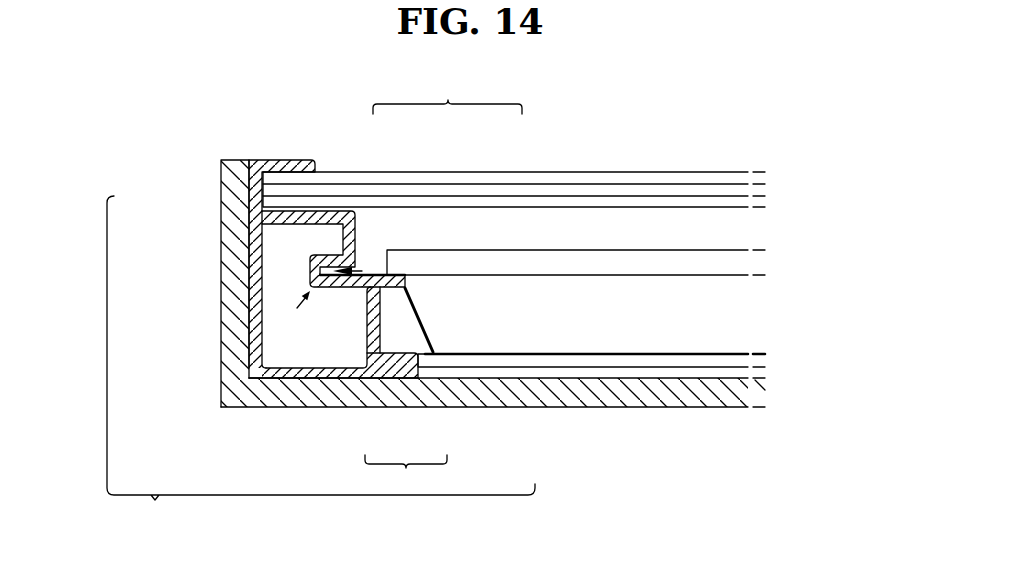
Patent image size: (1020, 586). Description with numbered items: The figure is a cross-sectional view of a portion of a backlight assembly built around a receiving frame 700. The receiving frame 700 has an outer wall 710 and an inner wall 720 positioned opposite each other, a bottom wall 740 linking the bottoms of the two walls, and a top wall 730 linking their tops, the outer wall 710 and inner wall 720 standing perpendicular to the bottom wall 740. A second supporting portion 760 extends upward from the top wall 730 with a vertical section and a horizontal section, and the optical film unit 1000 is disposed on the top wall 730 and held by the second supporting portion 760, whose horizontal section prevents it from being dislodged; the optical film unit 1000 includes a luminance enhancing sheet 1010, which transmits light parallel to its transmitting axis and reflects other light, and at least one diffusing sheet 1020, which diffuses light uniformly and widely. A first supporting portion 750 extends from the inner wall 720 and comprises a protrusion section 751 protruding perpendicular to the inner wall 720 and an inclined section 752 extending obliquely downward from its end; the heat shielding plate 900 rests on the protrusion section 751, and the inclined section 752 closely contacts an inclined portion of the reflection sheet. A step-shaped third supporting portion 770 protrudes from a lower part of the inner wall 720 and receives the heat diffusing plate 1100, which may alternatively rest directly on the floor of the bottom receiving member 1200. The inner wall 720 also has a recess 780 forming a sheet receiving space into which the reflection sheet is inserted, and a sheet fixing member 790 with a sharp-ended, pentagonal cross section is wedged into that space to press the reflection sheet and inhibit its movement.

The receiving frame 700 is at (321, 365).
The outer wall 710 is at (250, 284).
The inner wall 720 is at (267, 380).
The top wall 730 is at (300, 225).
The bottom wall 740 is at (330, 368).
The first supporting portion 750 is at (406, 475).
The protrusion section 751 is at (381, 284).
The inclined section 752 is at (397, 290).
The second supporting portion 760 is at (233, 195).
The third supporting portion 770 is at (420, 372).
The recess 780 is at (297, 308).
The sheet fixing member 790 is at (366, 333).
The heat shielding plate 900 is at (745, 263).
The optical film unit 1000 is at (514, 142).
The luminance enhancing sheet 1010 is at (378, 178).
The diffusing sheet 1020 is at (503, 207).
The heat diffusing plate 1100 is at (710, 362).
The bottom receiving member 1200 is at (612, 390).